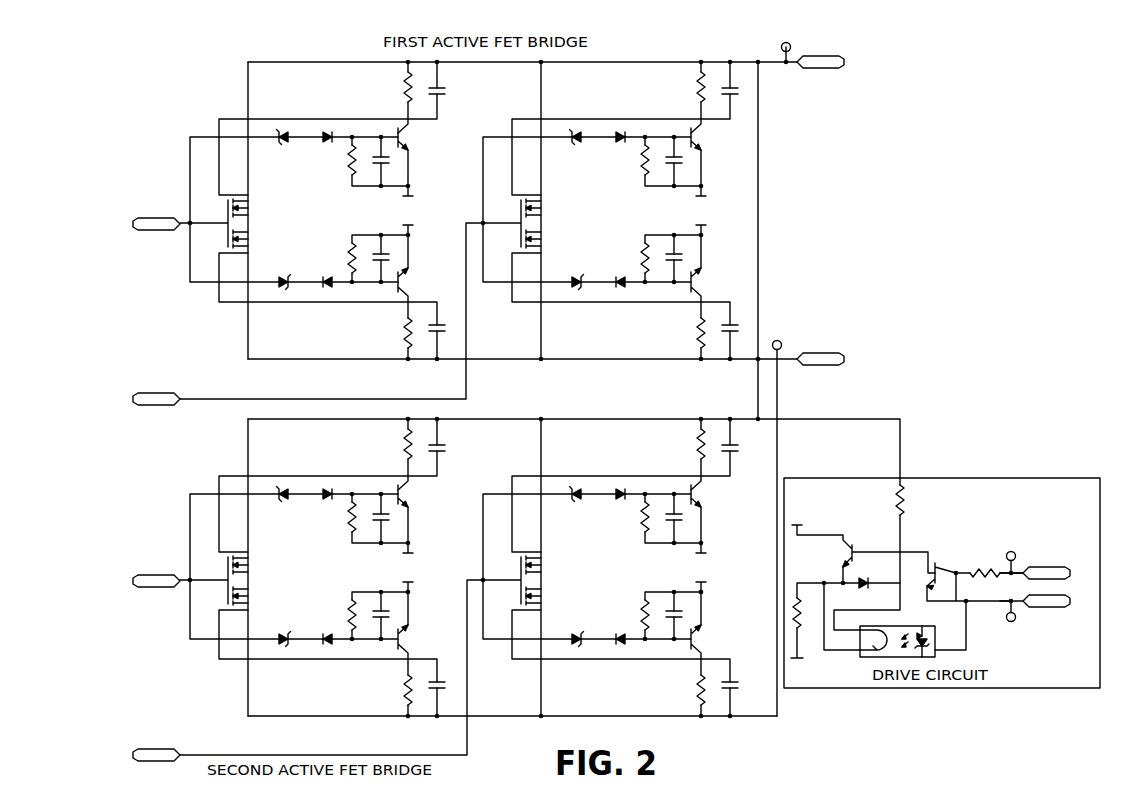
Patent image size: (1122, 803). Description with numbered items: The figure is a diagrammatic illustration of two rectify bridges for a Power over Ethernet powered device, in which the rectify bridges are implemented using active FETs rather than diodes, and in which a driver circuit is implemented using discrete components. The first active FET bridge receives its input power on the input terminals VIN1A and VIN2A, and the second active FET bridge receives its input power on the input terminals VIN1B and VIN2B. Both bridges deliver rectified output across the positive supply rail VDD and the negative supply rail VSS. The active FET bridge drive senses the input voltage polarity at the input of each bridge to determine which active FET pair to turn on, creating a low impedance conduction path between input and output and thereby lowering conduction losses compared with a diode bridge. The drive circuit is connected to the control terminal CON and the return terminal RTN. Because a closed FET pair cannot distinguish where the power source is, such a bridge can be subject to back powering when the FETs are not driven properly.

The positive supply terminal VDD is at (801, 49).
The negative supply terminal VSS is at (801, 519).
The first bridge input 1A VIN1A is at (151, 211).
The first bridge input 2A VIN2A is at (297, 314).
The second bridge input 1B VIN1B is at (151, 568).
The second bridge input 2B VIN2B is at (297, 670).
The control terminal CON is at (1035, 563).
The return terminal RTN is at (1035, 614).